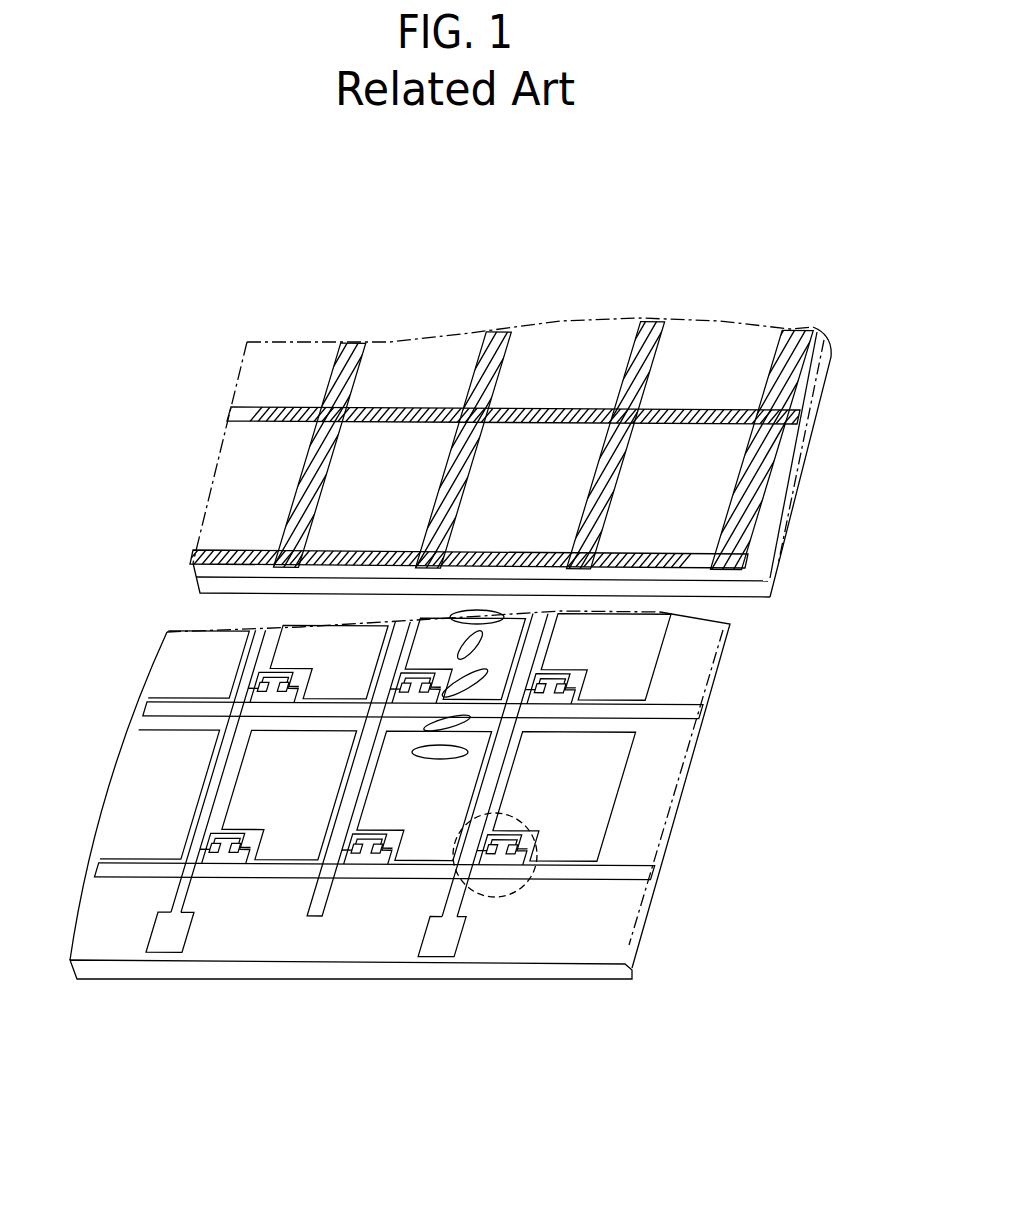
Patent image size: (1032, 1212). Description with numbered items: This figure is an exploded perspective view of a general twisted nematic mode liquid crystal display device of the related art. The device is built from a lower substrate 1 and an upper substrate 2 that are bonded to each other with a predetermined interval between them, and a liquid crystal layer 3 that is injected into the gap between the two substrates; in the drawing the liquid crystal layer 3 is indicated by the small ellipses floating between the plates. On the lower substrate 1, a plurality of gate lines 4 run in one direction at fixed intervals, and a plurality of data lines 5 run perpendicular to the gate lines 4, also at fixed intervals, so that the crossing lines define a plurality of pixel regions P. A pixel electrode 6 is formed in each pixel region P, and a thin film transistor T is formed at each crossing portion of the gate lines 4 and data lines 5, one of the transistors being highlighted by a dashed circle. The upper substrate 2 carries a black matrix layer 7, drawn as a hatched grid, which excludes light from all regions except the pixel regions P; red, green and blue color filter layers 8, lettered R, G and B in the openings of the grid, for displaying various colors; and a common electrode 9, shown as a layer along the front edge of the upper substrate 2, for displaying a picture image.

The lower substrate 1 is at (590, 974).
The upper substrate 2 is at (751, 575).
The liquid crystal layer 3 is at (437, 677).
The gate line 4 is at (604, 877).
The data line 5 is at (450, 902).
The pixel electrode 6 is at (614, 809).
The black matrix layer 7 is at (792, 418).
The color filter layer 8 is at (727, 490).
The common electrode 9 is at (753, 591).
The pixel region P is at (653, 765).
The thin film transistor T is at (495, 897).